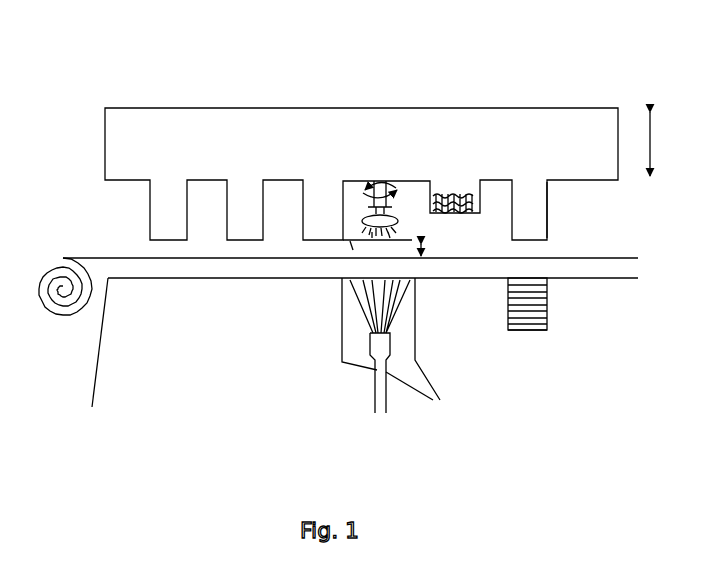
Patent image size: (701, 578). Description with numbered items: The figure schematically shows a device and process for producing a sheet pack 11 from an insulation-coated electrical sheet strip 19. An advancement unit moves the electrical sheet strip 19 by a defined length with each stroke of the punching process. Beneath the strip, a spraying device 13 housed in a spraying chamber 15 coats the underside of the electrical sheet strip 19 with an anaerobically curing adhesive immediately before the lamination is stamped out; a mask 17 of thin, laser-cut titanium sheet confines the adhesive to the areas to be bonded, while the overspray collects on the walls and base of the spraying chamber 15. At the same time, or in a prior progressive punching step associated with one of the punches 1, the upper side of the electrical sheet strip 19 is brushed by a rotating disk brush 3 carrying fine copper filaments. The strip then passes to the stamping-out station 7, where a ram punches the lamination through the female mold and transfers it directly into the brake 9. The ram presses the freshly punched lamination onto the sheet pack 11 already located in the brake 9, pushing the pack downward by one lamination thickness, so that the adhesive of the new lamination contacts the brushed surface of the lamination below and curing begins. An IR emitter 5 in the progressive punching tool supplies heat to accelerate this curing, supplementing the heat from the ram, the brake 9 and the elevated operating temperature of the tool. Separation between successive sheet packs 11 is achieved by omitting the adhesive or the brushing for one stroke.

The punch 1 is at (170, 192).
The disk brush 3 is at (380, 180).
The IR emitter 5 is at (457, 186).
The stamping-out station 7 is at (527, 183).
The brake 9 is at (562, 295).
The sheet pack 11 is at (508, 315).
The spraying device 13 is at (380, 417).
The spraying chamber 15 is at (338, 362).
The mask 17 is at (352, 244).
The electrical sheet strip 19 is at (63, 322).